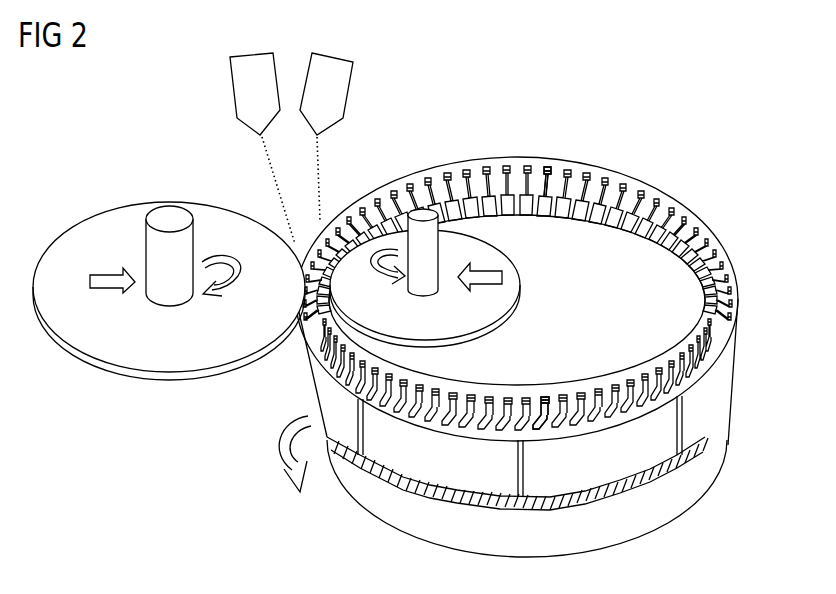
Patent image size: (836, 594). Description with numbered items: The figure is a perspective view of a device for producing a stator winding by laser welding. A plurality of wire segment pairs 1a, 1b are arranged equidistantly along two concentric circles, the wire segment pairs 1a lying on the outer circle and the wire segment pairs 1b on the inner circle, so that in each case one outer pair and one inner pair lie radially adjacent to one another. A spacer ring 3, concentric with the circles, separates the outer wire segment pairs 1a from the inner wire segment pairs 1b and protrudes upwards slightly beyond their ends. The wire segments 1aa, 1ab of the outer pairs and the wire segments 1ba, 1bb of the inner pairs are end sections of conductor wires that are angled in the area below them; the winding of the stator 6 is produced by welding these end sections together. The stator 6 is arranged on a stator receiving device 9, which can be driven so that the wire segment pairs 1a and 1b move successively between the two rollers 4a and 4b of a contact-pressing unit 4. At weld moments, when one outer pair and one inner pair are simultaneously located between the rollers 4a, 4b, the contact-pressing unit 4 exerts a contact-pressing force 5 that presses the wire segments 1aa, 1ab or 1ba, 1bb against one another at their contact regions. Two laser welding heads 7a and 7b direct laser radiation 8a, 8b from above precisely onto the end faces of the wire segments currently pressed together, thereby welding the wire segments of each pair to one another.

The wire segment pair of the outer circle 1a is at (705, 338).
The wire segment 1aa is at (546, 397).
The wire segment 1ab is at (537, 398).
The wire segment pair of the inner circle 1b is at (641, 213).
The wire segment 1ba is at (556, 186).
The wire segment 1bb is at (544, 167).
The spacer ring 3 is at (663, 193).
The contact-pressing unit 4 is at (169, 324).
The roller 4a is at (126, 333).
The roller 4b is at (487, 234).
The contact-pressing force 5 is at (104, 276).
The stator 6 is at (647, 443).
The laser welding head 7a is at (252, 88).
The laser welding head 7b is at (332, 85).
The laser radiation 8a is at (262, 153).
The laser radiation 8b is at (318, 153).
The stator receiving device 9 is at (612, 520).